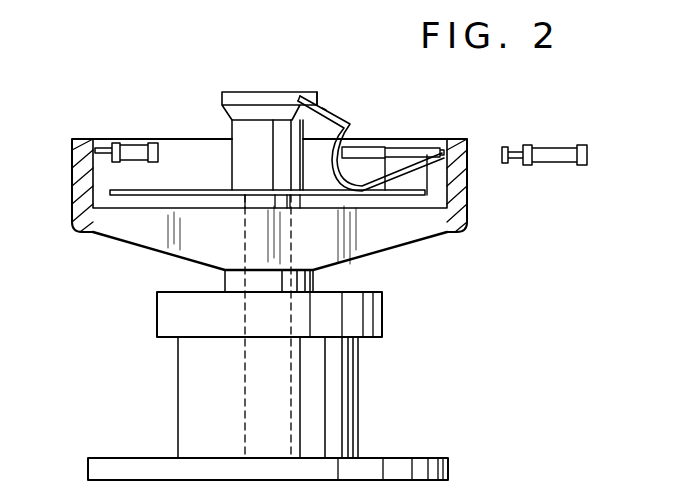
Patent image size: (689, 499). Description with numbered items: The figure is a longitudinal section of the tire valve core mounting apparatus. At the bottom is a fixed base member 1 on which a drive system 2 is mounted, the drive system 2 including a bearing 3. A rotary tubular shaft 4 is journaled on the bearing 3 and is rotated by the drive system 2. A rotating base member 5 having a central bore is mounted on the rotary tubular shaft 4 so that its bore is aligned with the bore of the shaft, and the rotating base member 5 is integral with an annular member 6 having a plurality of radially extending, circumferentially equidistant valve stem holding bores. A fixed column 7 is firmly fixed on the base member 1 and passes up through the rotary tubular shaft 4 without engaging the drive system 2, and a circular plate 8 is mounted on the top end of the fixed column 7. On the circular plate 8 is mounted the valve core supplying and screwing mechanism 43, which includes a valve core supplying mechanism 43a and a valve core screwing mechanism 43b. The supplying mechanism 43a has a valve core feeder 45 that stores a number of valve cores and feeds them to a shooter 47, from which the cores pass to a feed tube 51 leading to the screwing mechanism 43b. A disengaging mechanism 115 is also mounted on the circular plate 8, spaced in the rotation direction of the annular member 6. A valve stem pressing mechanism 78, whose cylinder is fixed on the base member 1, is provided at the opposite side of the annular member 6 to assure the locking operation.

The base member 1 is at (147, 457).
The drive system 2 is at (358, 400).
The bearing 3 is at (157, 316).
The rotary tubular shaft 4 is at (312, 275).
The rotating base member 5 is at (412, 250).
The annular member 6 is at (467, 196).
The fixed column 7 is at (243, 200).
The circular plate 8 is at (198, 188).
The valve core feeder 45 is at (252, 97).
The valve core supplying and screwing mechanism 43 is at (350, 112).
The valve core supplying mechanism 43a is at (297, 90).
The valve core screwing mechanism 43b is at (400, 142).
The shooter 47 is at (326, 112).
The feed tube 51 is at (384, 168).
The disengaging mechanism 115 is at (135, 141).
The valve stem pressing mechanism 78 is at (555, 145).